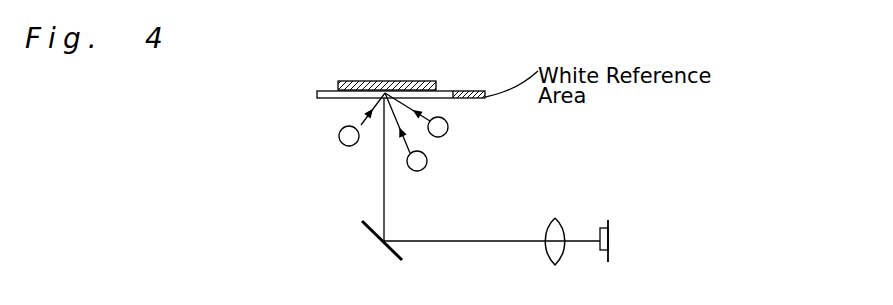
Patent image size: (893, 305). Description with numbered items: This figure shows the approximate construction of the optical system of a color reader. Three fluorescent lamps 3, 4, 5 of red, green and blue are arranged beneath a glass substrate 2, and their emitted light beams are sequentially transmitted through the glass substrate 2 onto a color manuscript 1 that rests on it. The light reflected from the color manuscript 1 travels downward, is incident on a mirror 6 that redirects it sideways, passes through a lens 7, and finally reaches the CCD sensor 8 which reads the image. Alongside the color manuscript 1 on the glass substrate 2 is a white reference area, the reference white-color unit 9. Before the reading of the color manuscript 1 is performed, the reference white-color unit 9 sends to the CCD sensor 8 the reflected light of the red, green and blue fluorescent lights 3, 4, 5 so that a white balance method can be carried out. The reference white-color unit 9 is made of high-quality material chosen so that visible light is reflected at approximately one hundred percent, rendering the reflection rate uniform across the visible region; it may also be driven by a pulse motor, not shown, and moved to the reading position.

The color manuscript 1 is at (363, 81).
The glass substrate 2 is at (318, 98).
The fluorescent lamp (red) 3 is at (340, 135).
The fluorescent lamp (green) 4 is at (424, 168).
The fluorescent lamp (blue) 5 is at (448, 126).
The mirror 6 is at (372, 233).
The lens 7 is at (558, 218).
The CCD sensor 8 is at (610, 230).
The reference white-color unit 9 is at (483, 90).